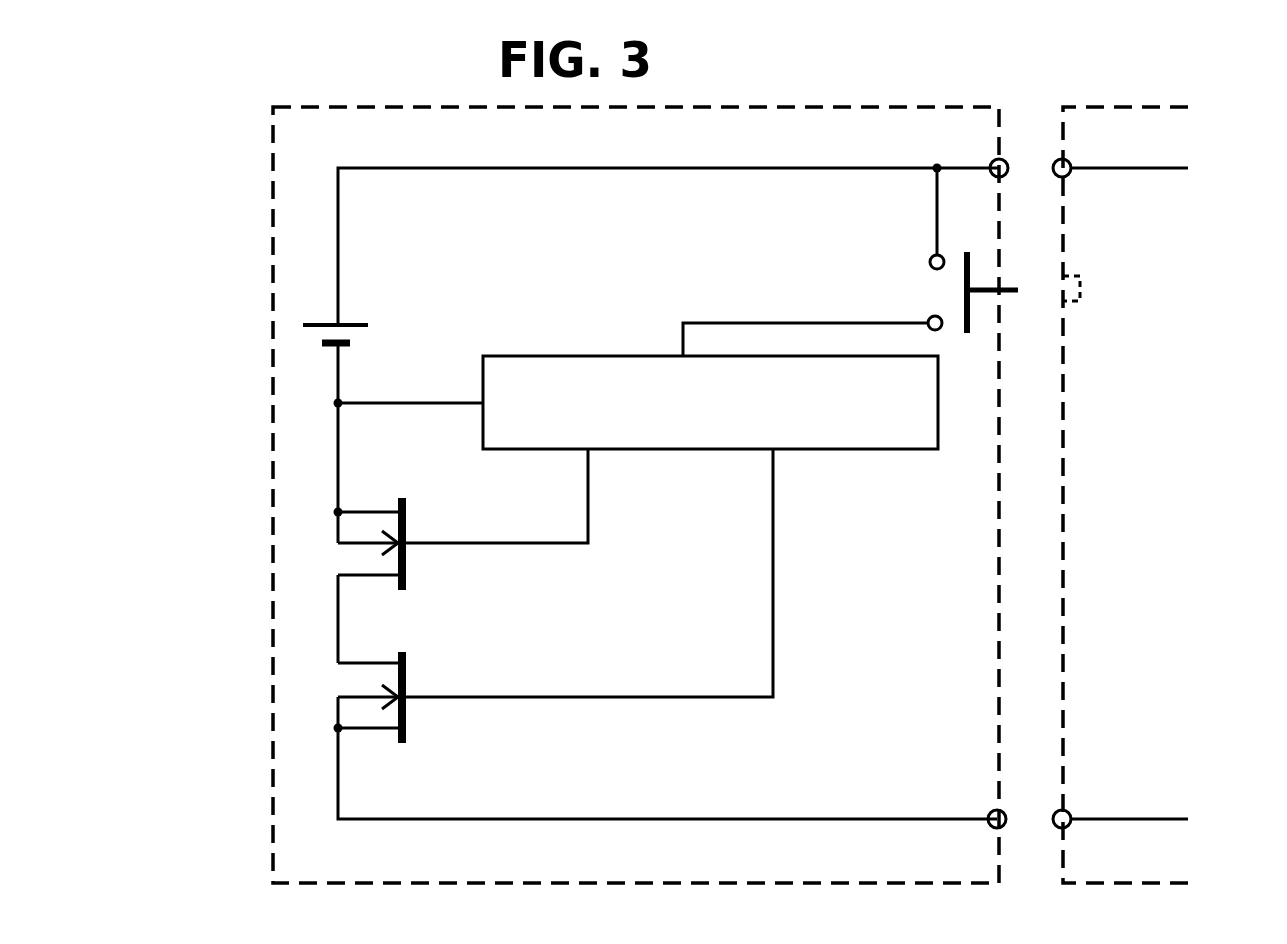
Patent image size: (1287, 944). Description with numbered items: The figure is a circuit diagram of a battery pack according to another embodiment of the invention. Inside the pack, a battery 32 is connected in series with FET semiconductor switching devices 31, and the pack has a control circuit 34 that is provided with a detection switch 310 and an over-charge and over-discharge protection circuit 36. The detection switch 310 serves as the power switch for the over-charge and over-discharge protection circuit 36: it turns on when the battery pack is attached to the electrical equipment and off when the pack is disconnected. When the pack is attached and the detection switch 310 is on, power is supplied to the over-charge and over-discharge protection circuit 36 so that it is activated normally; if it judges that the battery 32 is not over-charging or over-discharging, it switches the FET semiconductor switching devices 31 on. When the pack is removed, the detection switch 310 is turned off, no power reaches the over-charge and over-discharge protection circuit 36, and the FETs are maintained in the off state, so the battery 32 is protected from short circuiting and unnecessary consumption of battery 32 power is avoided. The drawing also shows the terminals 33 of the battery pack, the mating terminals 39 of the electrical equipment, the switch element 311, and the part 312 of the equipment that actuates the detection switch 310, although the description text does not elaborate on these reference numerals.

The FET semiconductor switching devices 31 is at (320, 680).
The battery 32 is at (352, 325).
The battery pack terminals 33 is at (1004, 160).
The control circuit 34 is at (703, 306).
The over-charge and over-discharge protection circuit 36 is at (926, 428).
The external device terminals 39 is at (1068, 174).
The detection switch 310 is at (906, 258).
The switch 311 is at (1008, 292).
The connector portion 312 is at (1087, 288).